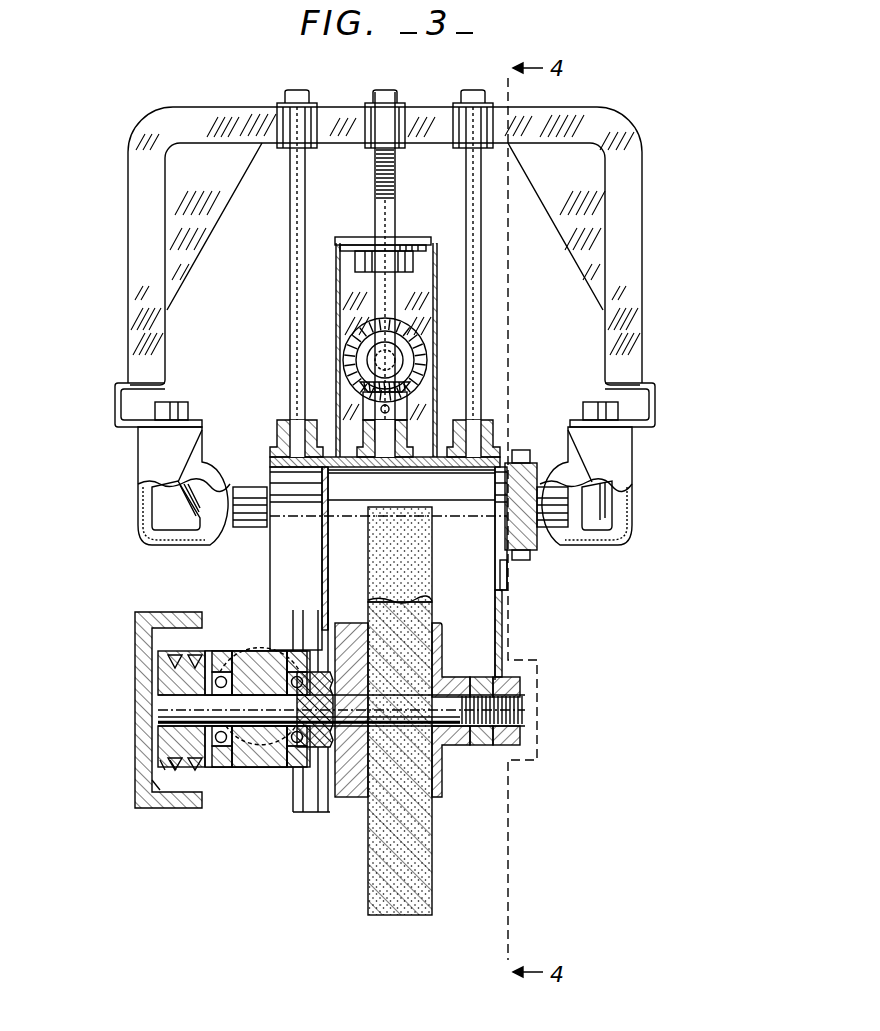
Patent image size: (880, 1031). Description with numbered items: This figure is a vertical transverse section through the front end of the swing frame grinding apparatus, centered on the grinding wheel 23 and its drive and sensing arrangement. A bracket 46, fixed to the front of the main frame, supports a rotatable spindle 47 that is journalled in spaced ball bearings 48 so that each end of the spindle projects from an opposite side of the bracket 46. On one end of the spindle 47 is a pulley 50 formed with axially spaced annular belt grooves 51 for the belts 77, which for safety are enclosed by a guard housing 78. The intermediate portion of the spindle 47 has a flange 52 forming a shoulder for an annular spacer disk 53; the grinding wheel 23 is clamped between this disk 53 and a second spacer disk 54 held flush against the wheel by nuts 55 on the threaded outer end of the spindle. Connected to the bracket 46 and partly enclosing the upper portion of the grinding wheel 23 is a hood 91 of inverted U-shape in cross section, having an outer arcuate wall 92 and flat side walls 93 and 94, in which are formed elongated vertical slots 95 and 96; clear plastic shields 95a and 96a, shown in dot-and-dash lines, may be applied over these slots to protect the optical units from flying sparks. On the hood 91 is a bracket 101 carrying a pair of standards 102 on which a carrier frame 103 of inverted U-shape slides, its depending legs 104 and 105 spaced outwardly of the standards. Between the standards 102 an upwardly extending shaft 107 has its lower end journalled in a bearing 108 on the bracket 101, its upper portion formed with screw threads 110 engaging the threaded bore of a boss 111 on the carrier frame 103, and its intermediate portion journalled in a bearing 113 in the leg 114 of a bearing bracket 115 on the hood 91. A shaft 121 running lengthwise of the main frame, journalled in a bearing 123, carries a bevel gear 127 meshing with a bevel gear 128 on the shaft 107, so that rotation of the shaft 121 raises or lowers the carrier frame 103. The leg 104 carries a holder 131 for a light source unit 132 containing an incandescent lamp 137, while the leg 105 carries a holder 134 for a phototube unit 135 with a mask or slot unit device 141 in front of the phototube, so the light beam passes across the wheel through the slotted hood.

The grinding wheel 23 is at (386, 897).
The bracket 46 is at (238, 777).
The spindle 47 is at (168, 712).
The ball bearings 48 is at (265, 775).
The pulley 50 is at (175, 676).
The annular belt grooves 51 is at (202, 646).
The flange 52 is at (308, 812).
The spacer disk 53 is at (336, 812).
The spacer disk 54 is at (444, 780).
The nuts 55 is at (498, 746).
The belts 77 is at (188, 797).
The guard housing 78 is at (140, 808).
The hood 91 is at (462, 631).
The arcuate wall 92 is at (458, 470).
The side wall 93 is at (325, 597).
The side wall 94 is at (505, 605).
The elongated slot 95 is at (322, 558).
The plastic sheet shield 95a is at (388, 533).
The elongated vertical slot 96 is at (504, 592).
The plastic sheet shield 96a is at (520, 575).
The bracket 101 is at (268, 460).
The standards 102 is at (482, 240).
The carrier frame 103 is at (216, 106).
The leg 104 is at (128, 246).
The leg 105 is at (642, 270).
The shaft 107 is at (394, 224).
The bearing 108 is at (410, 430).
The screw threads 110 is at (396, 186).
The boss 111 is at (402, 100).
The bearing 113 is at (368, 262).
The leg 114 is at (344, 243).
The bearing bracket 115 is at (345, 286).
The shaft 121 is at (424, 360).
The bearing 123 is at (352, 370).
The bevel gear 127 is at (358, 348).
The bevel gear 128 is at (364, 390).
The holder 131 is at (160, 456).
The light source unit 132 is at (128, 470).
The holder 134 is at (610, 457).
The phototube unit 135 is at (630, 536).
The incandescent lamp 137 is at (165, 514).
The mask or slot unit device 141 is at (542, 549).